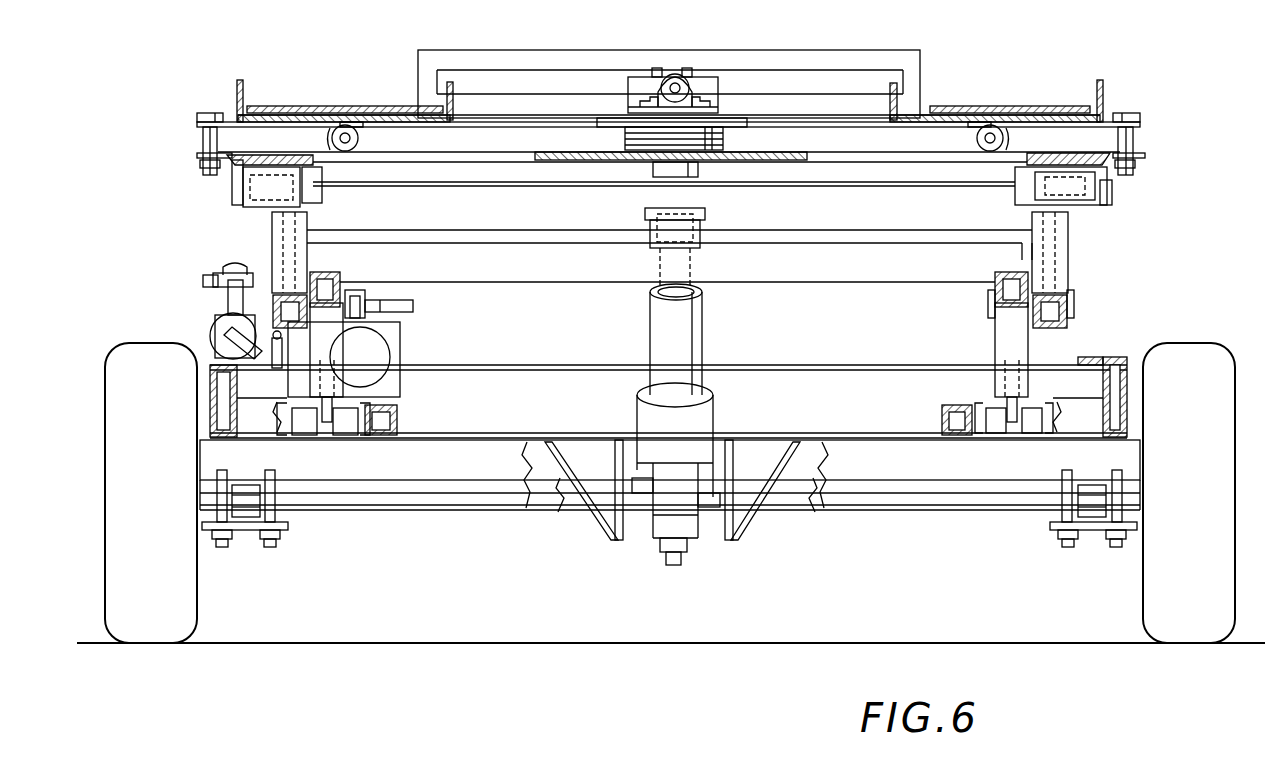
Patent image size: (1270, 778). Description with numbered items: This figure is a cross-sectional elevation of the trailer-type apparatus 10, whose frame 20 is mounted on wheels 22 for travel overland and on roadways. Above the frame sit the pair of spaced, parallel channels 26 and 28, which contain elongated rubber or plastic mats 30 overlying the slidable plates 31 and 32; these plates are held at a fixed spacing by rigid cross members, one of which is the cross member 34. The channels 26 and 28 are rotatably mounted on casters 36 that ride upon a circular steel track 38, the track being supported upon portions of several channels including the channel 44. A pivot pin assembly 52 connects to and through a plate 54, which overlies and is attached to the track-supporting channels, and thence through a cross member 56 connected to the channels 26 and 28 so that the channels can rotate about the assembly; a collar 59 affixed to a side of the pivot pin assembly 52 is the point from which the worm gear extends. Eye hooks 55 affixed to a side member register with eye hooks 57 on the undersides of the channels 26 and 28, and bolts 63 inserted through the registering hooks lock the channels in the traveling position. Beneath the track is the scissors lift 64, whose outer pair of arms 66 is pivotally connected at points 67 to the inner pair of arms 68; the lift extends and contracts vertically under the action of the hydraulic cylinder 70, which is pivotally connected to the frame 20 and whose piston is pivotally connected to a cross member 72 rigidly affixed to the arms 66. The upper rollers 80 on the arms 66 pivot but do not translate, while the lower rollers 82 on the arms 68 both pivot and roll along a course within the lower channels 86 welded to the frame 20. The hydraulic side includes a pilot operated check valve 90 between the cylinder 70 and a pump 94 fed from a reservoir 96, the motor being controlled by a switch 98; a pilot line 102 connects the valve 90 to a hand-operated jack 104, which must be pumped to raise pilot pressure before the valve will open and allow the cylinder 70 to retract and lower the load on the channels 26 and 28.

The apparatus 10 is at (1150, 198).
The frame 20 is at (1080, 358).
The wheel 22 is at (193, 580).
The channel 26 is at (1104, 88).
The channel 28 is at (238, 80).
The mat 30 is at (310, 106).
The slidable plate 31 is at (915, 110).
The slidable plate 32 is at (430, 108).
The cross member 34 is at (830, 50).
The caster 36 is at (360, 138).
The circular steel track 38 is at (255, 158).
The channel 44 is at (815, 175).
The pivot pin assembly 52 is at (660, 75).
The plate 54 is at (550, 162).
The eye hook 55 is at (197, 157).
The cross member 56 is at (507, 114).
The eye hook 57 is at (197, 122).
The collar 59 is at (698, 90).
The bolt 63 is at (203, 142).
The scissors lift 64 is at (338, 275).
The outer arm 66 is at (272, 237).
The pivot point 67 is at (358, 293).
The inner arm 68 is at (345, 350).
The hydraulic cylinder 70 is at (700, 320).
The cross member 72 is at (600, 283).
The upper roller 80 is at (295, 210).
The lower roller 82 is at (340, 437).
The lower channel 86 is at (348, 438).
The pilot operated check valve 90 is at (650, 540).
The hydraulic fluid pump 94 is at (400, 368).
The reservoir 96 is at (395, 365).
The switch 98 is at (275, 366).
The pilot line 102 is at (230, 337).
The hand-operated jack 104 is at (213, 335).